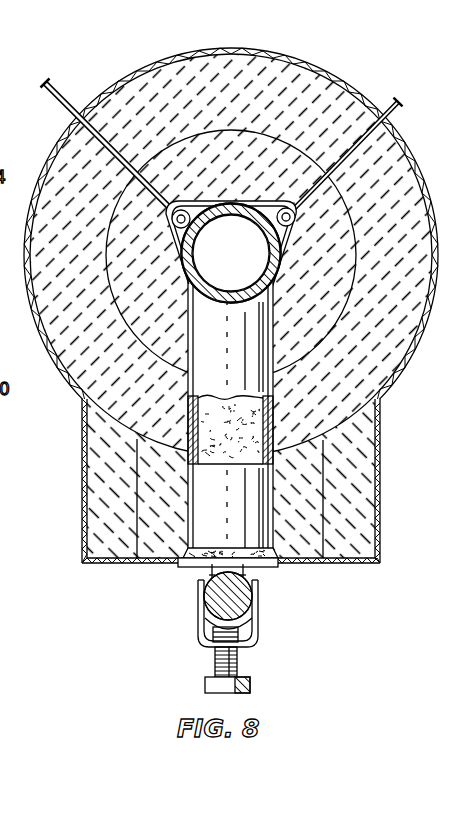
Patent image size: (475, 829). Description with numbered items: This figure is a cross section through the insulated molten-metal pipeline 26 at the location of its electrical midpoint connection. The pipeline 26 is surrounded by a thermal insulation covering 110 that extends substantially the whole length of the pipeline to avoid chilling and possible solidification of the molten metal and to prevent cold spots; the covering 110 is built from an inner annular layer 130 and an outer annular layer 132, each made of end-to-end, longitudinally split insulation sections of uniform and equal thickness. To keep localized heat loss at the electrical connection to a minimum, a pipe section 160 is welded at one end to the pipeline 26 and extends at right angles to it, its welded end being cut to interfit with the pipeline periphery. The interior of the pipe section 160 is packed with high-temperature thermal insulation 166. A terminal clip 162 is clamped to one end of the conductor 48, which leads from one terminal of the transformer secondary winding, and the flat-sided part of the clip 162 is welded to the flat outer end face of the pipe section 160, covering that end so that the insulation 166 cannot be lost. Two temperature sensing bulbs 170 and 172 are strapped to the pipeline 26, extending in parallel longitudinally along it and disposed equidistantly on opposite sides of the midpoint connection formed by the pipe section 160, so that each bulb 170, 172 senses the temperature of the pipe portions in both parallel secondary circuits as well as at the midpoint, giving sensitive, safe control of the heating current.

The pipeline 26 is at (178, 283).
The conductor 48 is at (218, 595).
The thermal insulation covering 110 is at (414, 352).
The inner annular layer 130 is at (349, 203).
The outer annular layer 132 is at (430, 290).
The pipe section 160 is at (274, 500).
The terminal clip 162 is at (198, 638).
The thermal insulation 166 is at (248, 440).
The temperature sensing bulb 170 is at (184, 212).
The temperature sensing bulb 172 is at (295, 220).